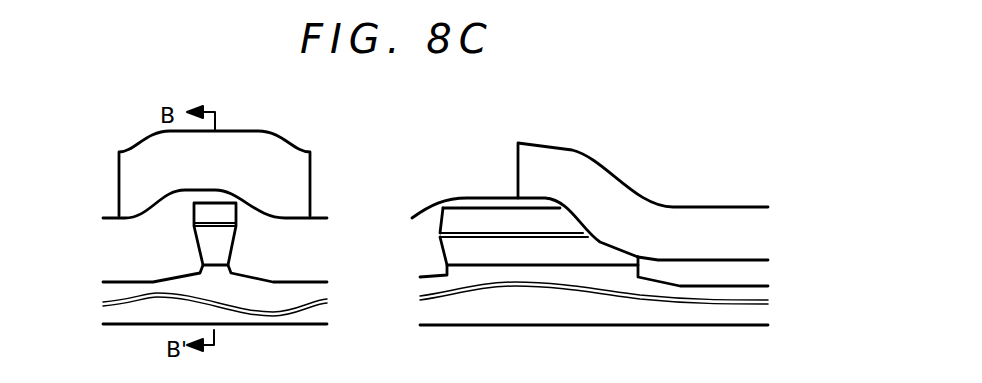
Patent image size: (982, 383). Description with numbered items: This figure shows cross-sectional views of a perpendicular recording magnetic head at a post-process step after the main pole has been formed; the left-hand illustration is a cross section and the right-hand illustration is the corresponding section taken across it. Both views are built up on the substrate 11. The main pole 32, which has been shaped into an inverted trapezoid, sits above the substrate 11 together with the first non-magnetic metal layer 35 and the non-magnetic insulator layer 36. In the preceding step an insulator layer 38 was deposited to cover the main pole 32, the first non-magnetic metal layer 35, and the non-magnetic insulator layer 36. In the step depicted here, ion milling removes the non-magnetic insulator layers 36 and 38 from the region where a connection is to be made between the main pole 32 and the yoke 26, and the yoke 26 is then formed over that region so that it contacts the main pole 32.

The substrate 11 is at (452, 317).
The yoke 26 is at (238, 153).
The main pole 32 is at (223, 253).
The first non-magnetic metal layer 35 is at (200, 222).
The non-magnetic insulator layer 36 is at (213, 215).
The insulator layer 38 is at (303, 252).